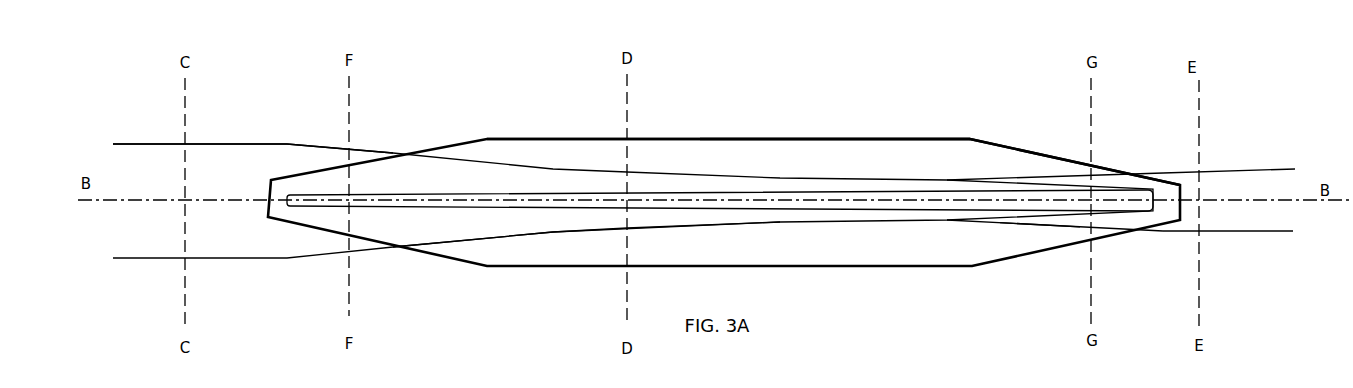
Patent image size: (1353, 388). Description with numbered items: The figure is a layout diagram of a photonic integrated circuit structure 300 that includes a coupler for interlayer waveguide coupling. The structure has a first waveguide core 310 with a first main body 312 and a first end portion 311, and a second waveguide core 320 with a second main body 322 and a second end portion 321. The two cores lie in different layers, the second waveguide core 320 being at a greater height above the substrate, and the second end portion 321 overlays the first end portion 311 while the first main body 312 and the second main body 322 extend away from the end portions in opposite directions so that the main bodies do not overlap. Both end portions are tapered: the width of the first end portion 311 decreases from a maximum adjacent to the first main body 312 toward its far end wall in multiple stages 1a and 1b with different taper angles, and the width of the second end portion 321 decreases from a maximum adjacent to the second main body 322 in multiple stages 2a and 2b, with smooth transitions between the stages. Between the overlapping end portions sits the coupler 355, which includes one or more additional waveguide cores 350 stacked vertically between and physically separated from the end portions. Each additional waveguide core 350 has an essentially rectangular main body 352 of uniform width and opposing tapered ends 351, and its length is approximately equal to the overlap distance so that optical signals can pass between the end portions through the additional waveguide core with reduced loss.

The PIC structure 300 is at (1138, 70).
The first waveguide core 310 is at (1243, 234).
The first end portion 311 is at (1012, 175).
The first main body 312 is at (1250, 166).
The second waveguide core 320 is at (150, 143).
The second end portion 321 is at (370, 147).
The second main body 322 is at (213, 141).
The additional waveguide core 350 is at (870, 113).
The tapered end 351 is at (452, 141).
The main body of additional waveguide core 352 is at (718, 138).
The coupler 355 is at (1075, 162).
The first taper stage of first end portion 1a is at (1040, 225).
The second taper stage of first end portion 1b is at (742, 212).
The first taper stage of second end portion 2a is at (442, 246).
The second taper stage of second end portion 2b is at (633, 229).